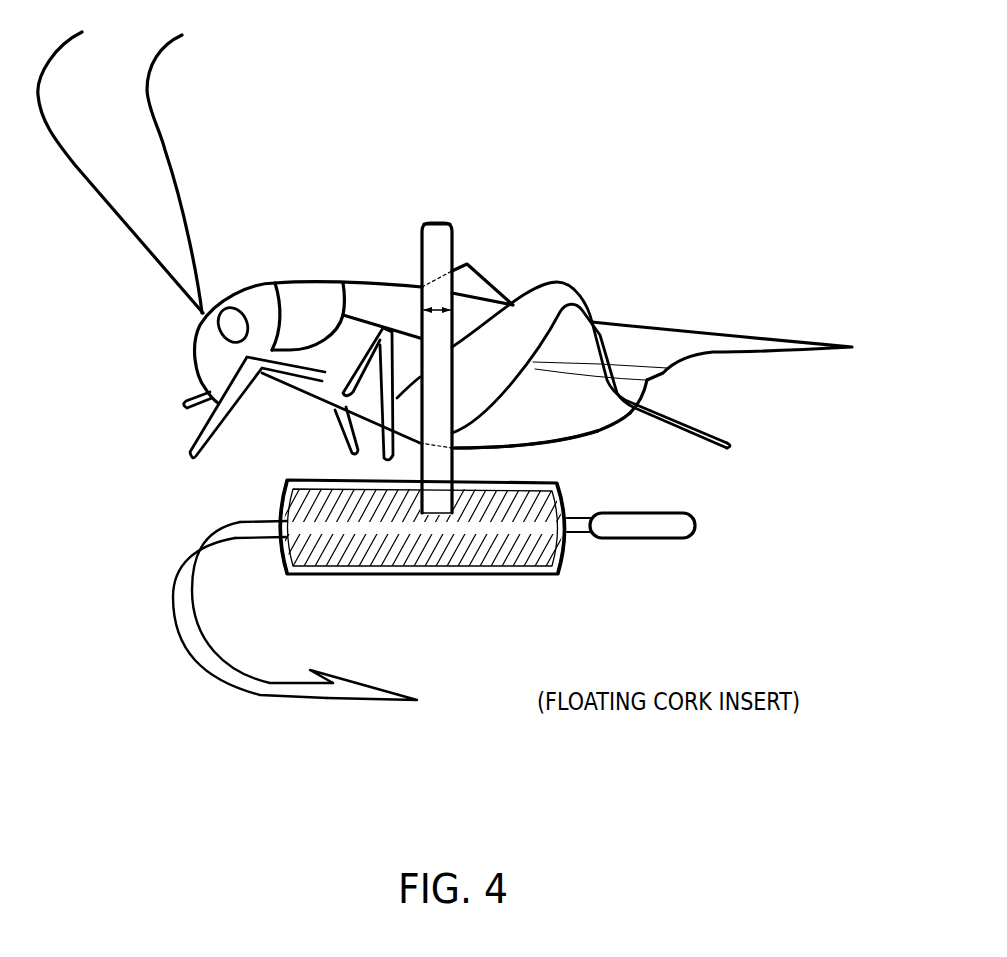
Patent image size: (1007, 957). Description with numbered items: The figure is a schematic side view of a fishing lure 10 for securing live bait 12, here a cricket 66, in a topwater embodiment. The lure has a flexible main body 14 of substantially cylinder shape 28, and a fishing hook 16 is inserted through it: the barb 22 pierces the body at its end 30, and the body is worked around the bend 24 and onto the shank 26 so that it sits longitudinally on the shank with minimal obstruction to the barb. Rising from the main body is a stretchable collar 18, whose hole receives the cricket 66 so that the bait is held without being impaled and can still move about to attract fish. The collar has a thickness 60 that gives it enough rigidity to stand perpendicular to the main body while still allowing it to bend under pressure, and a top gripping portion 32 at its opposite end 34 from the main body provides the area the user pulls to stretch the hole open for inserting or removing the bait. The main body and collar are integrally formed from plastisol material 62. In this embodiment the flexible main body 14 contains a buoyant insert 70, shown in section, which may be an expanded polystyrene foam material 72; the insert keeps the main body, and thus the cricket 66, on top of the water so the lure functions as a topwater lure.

The fishing lure 10 is at (583, 85).
The live bait 12 is at (445, 252).
The cricket 66 is at (482, 305).
The flexible main body 14 is at (443, 573).
The fishing hook 16 is at (673, 519).
The stretchable collar 18 is at (438, 223).
The barb 22 is at (374, 670).
The bend 24 is at (229, 633).
The shank 26 is at (357, 593).
The substantially cylinder shape 28 is at (311, 448).
The end 30 is at (602, 564).
The top gripping portion 32 is at (470, 230).
The opposite end 34 is at (512, 469).
The thickness 60 is at (437, 302).
The plastisol material 62 is at (274, 510).
The buoyant insert 70 is at (577, 554).
The expanded polystyrene foam material 72 is at (530, 557).